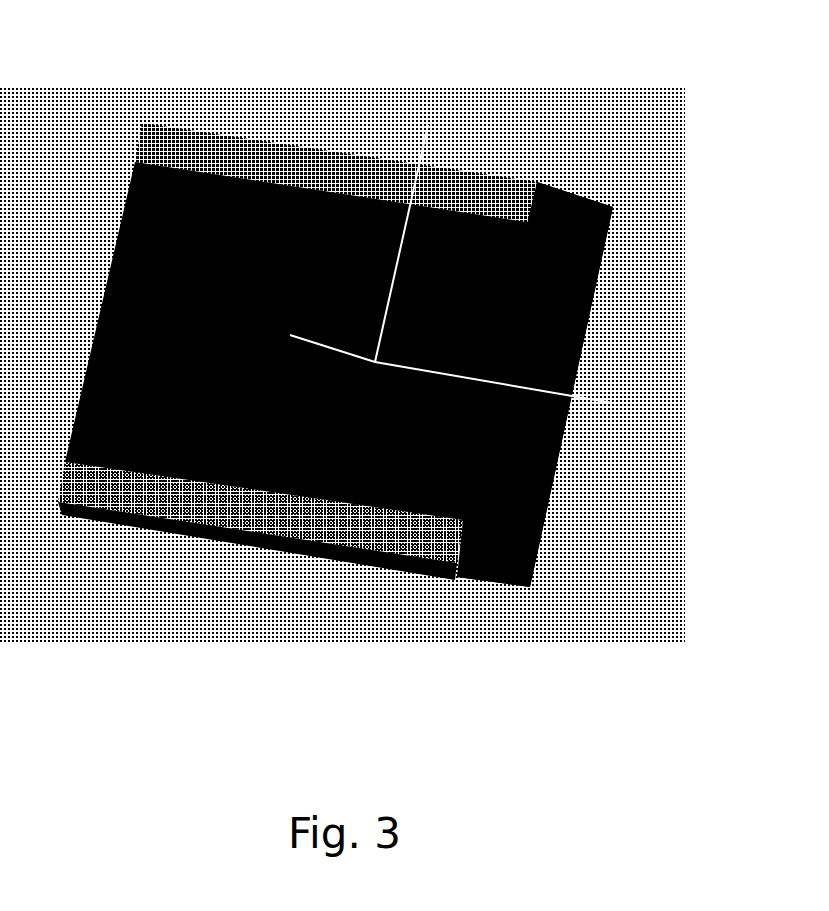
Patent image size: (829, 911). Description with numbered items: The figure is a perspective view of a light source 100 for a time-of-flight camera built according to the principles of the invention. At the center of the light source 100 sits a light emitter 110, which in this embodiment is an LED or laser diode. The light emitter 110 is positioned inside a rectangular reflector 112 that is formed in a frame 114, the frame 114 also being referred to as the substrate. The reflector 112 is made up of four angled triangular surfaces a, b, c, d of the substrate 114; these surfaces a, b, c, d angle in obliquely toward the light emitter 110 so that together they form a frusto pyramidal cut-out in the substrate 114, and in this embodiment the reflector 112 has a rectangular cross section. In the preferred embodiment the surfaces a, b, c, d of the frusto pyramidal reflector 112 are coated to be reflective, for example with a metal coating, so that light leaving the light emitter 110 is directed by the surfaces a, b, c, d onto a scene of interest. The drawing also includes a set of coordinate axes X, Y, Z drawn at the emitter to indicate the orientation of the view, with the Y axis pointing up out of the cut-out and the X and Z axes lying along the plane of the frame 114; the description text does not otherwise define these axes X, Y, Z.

The light source 100 is at (335, 300).
The light emitter 110 is at (333, 377).
The rectangular reflector 112 is at (317, 355).
The frame 114 is at (295, 153).
The angled triangular surface a is at (317, 355).
The angled triangular surface b is at (442, 243).
The angled triangular surface c is at (492, 328).
The angled triangular surface d is at (300, 450).
The X axis X is at (505, 391).
The Y axis Y is at (405, 235).
The Z axis Z is at (320, 335).